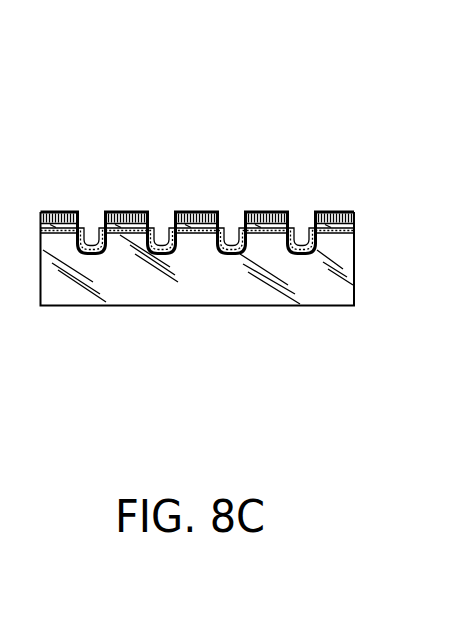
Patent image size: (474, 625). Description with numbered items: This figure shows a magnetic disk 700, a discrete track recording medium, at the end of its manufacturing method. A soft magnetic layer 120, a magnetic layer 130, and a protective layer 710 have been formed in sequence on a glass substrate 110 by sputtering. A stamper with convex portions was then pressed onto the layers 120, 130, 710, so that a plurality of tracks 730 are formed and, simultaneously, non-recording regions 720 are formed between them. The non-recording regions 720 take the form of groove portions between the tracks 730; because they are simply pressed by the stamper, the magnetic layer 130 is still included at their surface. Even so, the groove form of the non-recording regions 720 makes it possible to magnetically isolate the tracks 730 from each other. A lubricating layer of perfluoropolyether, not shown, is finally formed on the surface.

The magnetic disk 700 is at (252, 284).
The glass substrate 110 is at (242, 306).
The soft magnetic layer 120 is at (354, 232).
The magnetic layer 130 is at (354, 224).
The protective layer 710 is at (354, 213).
The non-recording regions 720 is at (243, 212).
The tracks 730 is at (197, 209).